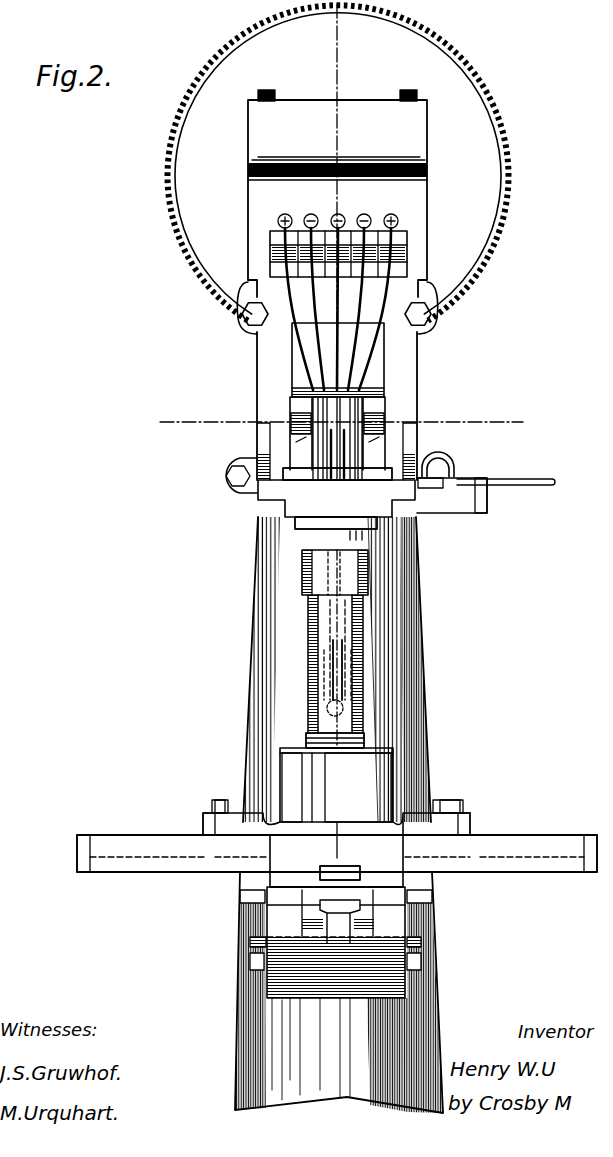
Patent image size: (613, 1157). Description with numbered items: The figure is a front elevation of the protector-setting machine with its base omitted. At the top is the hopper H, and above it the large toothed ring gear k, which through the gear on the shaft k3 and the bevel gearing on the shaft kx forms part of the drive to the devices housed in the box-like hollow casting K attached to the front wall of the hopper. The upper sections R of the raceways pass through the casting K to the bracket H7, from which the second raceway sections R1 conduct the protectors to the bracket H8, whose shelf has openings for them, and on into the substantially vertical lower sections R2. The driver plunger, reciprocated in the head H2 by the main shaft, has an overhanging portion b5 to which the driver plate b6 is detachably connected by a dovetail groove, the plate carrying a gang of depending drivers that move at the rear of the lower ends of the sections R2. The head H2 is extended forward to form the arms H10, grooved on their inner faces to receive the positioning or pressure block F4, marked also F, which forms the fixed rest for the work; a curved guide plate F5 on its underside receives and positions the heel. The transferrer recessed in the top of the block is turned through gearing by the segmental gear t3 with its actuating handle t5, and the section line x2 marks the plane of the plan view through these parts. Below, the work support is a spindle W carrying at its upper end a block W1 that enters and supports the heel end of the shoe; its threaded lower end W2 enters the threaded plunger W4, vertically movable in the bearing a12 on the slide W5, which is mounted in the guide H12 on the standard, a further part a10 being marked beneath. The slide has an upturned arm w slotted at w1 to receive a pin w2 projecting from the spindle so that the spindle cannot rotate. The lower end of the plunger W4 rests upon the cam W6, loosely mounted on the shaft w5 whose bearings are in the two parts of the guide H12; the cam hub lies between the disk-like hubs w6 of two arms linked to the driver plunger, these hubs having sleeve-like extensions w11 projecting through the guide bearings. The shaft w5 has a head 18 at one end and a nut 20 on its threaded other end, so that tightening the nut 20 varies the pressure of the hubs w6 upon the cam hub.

The ring gear k is at (407, 48).
The shaft k3 is at (500, 205).
The hopper H is at (224, 1032).
The hollow casting K is at (430, 191).
The shaft kx is at (283, 215).
The upper raceway sections R is at (392, 215).
The bracket H7 is at (407, 257).
The second raceway sections R1 is at (307, 312).
The bracket H8 is at (375, 377).
The overhanging projecting portion of plunger b5 is at (380, 410).
The driver plate b6 is at (300, 425).
The section line x2 is at (341, 415).
The lower raceway sections R2 is at (353, 457).
The pressure block portion F is at (282, 477).
The arms H10 is at (258, 497).
The segmental gear t3 is at (445, 472).
The actuating handle t5 is at (545, 480).
The head H2 is at (487, 500).
The positioning or pressure block F4 is at (297, 507).
The curved guide plate F5 is at (412, 540).
The block W1 is at (305, 580).
The spindle W is at (308, 638).
The slot w1 is at (340, 676).
The upturned arm w is at (322, 684).
The stud or pin w2 is at (327, 708).
The threaded lower end of spindle W2 is at (305, 735).
The threaded plunger W4 is at (412, 752).
The bearing a12 is at (305, 777).
The slide W5 is at (336, 858).
The hub cavity a10 is at (353, 885).
The guide H12 is at (270, 875).
The cam W6 is at (365, 903).
The head 18 is at (258, 943).
The shaft w5 is at (258, 965).
The sleeve-like extensions w11 is at (420, 945).
The nut 20 is at (425, 976).
The disk-like hubs w6 is at (312, 998).